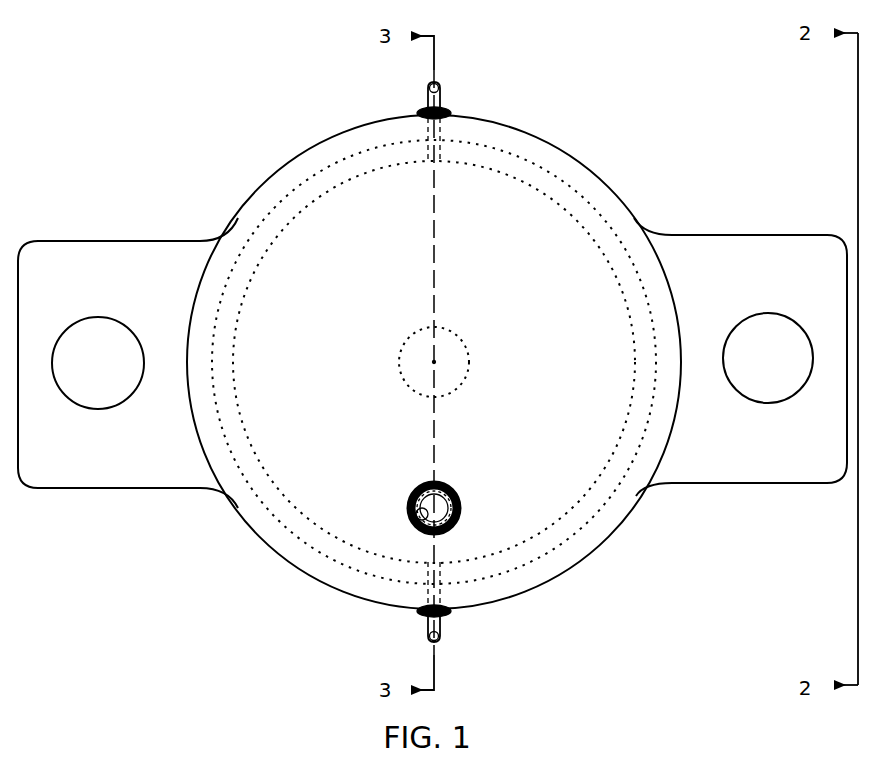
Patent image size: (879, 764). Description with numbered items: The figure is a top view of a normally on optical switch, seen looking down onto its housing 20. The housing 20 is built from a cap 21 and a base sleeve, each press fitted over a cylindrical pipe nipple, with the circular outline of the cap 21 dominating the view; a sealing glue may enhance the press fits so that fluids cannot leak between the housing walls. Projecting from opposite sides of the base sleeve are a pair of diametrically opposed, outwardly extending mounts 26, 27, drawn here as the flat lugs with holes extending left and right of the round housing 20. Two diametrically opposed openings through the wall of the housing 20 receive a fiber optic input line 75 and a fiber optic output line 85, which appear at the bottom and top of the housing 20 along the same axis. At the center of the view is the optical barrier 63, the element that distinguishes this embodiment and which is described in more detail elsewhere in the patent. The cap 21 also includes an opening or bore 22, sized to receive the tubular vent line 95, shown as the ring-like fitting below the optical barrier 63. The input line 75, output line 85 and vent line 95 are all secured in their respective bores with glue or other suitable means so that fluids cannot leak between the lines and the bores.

The housing 20 is at (283, 160).
The cap 21 is at (292, 546).
The bore 22 is at (444, 500).
The mount 26 is at (100, 248).
The mount 27 is at (725, 240).
The optical barrier 63 is at (398, 362).
The fiber optic input line 75 is at (440, 627).
The fiber optic output line 85 is at (440, 100).
The vent line 95 is at (409, 509).